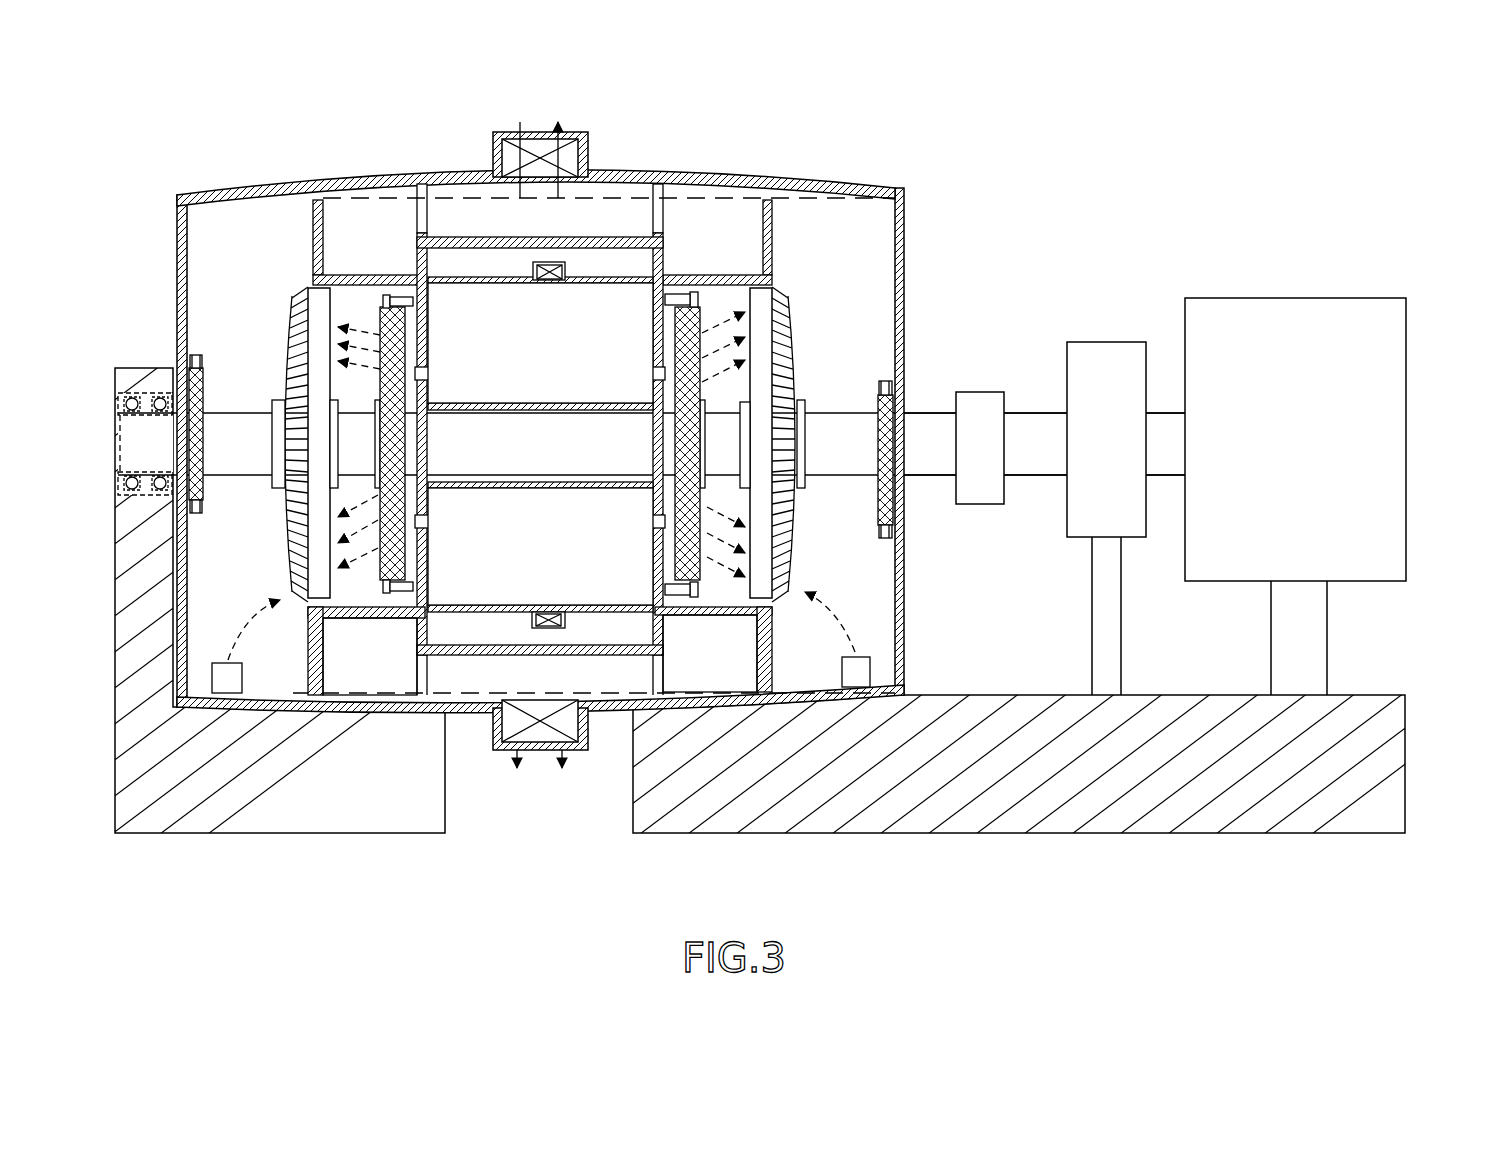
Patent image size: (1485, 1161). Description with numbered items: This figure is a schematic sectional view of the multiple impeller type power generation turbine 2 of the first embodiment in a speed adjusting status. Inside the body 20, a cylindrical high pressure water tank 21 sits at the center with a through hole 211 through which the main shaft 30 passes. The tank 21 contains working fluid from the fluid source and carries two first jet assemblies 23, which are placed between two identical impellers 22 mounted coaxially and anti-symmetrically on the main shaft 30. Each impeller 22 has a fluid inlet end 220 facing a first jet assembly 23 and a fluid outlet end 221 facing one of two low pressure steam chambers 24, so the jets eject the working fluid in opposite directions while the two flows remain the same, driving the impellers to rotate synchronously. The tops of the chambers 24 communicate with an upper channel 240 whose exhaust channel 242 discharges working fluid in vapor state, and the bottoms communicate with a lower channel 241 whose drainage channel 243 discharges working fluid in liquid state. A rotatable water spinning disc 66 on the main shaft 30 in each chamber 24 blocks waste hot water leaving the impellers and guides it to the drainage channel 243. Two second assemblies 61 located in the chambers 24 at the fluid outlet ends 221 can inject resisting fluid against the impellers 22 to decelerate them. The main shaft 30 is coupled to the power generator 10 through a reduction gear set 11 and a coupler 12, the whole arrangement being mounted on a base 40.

The multiple impeller type power generation turbine 2 is at (984, 207).
The power generator 10 is at (1313, 331).
The reduction gear set 11 is at (1096, 363).
The coupler 12 is at (973, 404).
The body 20 is at (905, 266).
The high pressure water tank 21 is at (587, 312).
The impeller 22 is at (308, 287).
The first jet assembly 23 is at (398, 290).
The low pressure steam chamber 24 is at (220, 232).
The main shaft 30 is at (1019, 431).
The base 40 is at (1405, 695).
The second assembly 61 is at (243, 690).
The water spinning disc 66 is at (197, 355).
The through hole 211 is at (443, 410).
The fluid inlet end 220 is at (318, 290).
The fluid outlet end 221 is at (283, 320).
The upper channel 240 is at (630, 212).
The lower channel 241 is at (447, 677).
The exhaust channel 242 is at (372, 198).
The drainage channel 243 is at (318, 697).